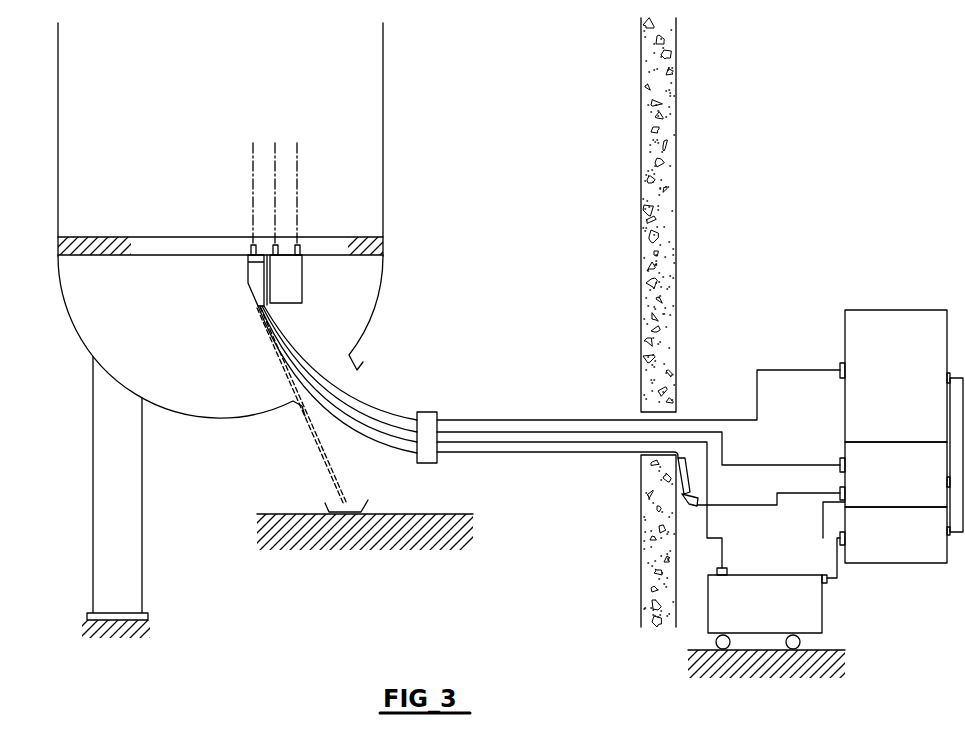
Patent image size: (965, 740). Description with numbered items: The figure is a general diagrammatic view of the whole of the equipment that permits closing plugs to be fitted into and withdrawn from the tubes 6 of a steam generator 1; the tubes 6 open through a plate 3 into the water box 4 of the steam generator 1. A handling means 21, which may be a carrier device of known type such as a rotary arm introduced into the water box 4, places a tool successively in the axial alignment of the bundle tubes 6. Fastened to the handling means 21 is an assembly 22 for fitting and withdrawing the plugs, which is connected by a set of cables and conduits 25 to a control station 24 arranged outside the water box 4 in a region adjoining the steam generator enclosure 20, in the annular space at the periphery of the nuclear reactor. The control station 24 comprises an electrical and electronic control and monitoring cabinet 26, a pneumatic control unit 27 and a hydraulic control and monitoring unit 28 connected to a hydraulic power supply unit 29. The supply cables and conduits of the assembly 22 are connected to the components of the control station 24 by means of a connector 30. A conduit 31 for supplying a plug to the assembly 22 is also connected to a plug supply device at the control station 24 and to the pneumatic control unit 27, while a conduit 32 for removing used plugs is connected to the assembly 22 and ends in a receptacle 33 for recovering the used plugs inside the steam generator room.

The steam generator 1 is at (385, 192).
The perforated tray / plate 3 is at (385, 247).
The water box 4 is at (220, 337).
The bundle tubes 6 is at (297, 245).
The steam generator enclosure 20 is at (676, 182).
The handling means 21 is at (301, 292).
The assembly for fitting and withdrawing the plugs 22 is at (248, 286).
The control station 24 is at (768, 364).
The set of cables and conduits 25 is at (365, 417).
The electrical and electronic control and monitoring cabinet 26 is at (893, 330).
The pneumatic control unit 27 is at (692, 505).
The hydraulic control and monitoring unit 28 is at (917, 543).
The hydraulic power supply unit 29 is at (812, 615).
The connector 30 is at (427, 420).
The conduit for supplying a plug 31 is at (343, 428).
The conduit for removing used plugs 32 is at (325, 446).
The receptacle for recovering the used plugs 33 is at (323, 508).